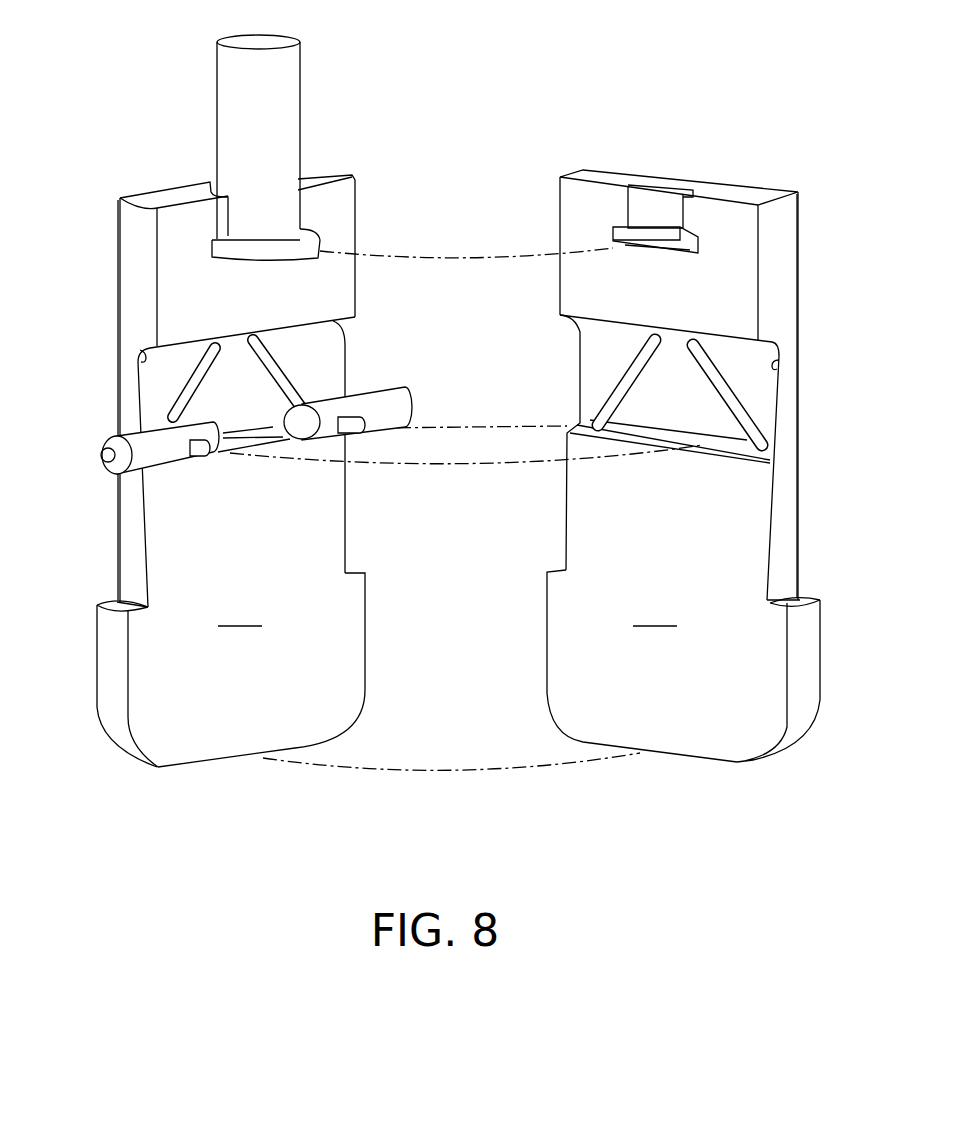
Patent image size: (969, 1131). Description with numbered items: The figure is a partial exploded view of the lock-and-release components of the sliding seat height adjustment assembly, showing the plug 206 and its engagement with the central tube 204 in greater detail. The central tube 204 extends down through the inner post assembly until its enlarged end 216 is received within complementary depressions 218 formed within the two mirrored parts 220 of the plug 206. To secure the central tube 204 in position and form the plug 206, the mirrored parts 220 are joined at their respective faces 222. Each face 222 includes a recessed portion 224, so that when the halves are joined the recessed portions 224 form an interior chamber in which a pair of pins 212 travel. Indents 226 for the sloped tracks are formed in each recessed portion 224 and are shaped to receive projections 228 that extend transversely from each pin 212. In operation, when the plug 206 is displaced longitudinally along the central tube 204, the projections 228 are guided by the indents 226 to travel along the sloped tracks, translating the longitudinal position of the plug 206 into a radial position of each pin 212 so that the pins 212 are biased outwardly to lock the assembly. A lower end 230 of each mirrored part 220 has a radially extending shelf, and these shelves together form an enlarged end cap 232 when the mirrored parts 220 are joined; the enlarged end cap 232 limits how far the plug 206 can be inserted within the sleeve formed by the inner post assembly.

The central tube 204 is at (303, 98).
The plug 206 is at (800, 297).
The pins 212 is at (110, 458).
The enlarged end 216 is at (290, 249).
The depressions 218 is at (655, 192).
The mirrored parts 220 is at (118, 370).
The faces 222 is at (447, 668).
The recessed portion 224 is at (134, 357).
The indents 226 is at (172, 404).
The projections 228 is at (194, 467).
The lower end 230 is at (97, 675).
The enlarged end cap 232 is at (100, 600).